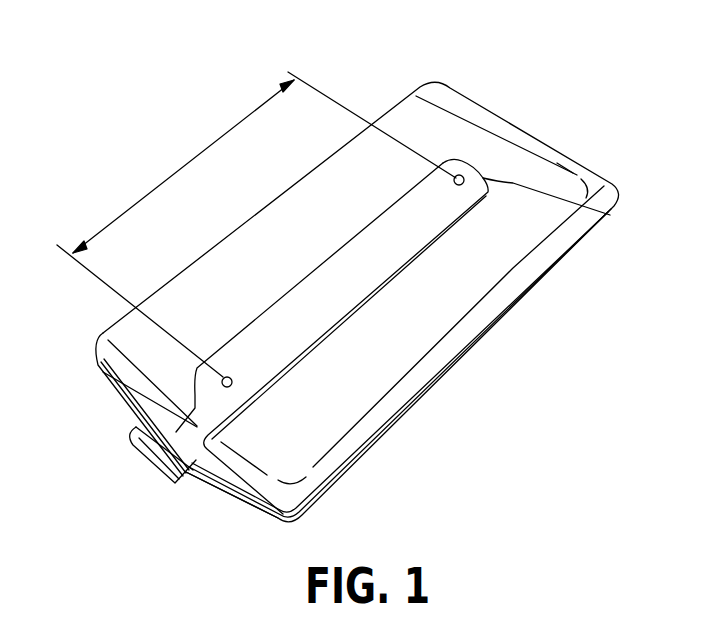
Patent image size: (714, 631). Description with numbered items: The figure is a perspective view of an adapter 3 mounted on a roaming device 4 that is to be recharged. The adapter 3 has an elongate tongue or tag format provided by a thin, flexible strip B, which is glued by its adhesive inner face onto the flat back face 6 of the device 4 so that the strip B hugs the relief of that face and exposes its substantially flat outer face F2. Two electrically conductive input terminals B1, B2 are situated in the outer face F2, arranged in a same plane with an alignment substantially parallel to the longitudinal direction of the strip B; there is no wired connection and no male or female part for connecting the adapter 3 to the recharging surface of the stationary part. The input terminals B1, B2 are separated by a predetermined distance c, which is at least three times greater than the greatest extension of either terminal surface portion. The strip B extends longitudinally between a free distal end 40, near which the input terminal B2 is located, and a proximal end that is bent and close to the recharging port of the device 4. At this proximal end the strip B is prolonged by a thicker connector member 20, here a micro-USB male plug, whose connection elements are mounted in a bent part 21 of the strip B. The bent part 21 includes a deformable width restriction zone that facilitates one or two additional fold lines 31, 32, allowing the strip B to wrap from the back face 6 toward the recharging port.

The adapter 3 is at (532, 275).
The roaming device 4 is at (596, 171).
The back face 6 is at (519, 160).
The connector member 20 is at (182, 478).
The bent part 21 is at (210, 466).
The additional fold line 31 is at (143, 422).
The additional fold line 32 is at (100, 368).
The distal end 40 is at (466, 176).
The strip B is at (396, 282).
The first input terminal B1 is at (234, 375).
The second input terminal B2 is at (604, 212).
The outer face F2 is at (320, 286).
The predetermined distance c is at (256, 224).